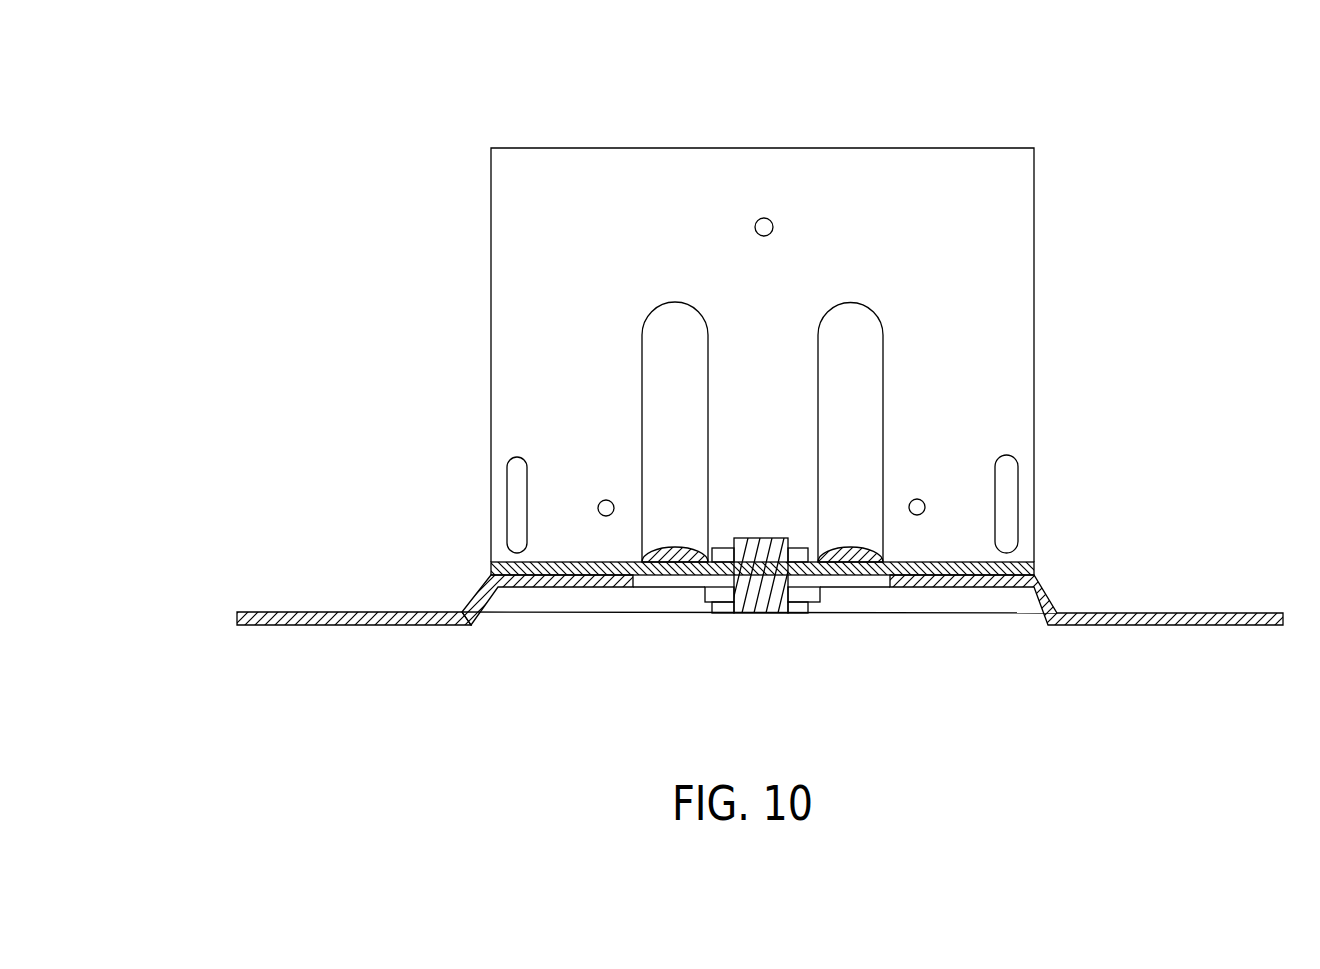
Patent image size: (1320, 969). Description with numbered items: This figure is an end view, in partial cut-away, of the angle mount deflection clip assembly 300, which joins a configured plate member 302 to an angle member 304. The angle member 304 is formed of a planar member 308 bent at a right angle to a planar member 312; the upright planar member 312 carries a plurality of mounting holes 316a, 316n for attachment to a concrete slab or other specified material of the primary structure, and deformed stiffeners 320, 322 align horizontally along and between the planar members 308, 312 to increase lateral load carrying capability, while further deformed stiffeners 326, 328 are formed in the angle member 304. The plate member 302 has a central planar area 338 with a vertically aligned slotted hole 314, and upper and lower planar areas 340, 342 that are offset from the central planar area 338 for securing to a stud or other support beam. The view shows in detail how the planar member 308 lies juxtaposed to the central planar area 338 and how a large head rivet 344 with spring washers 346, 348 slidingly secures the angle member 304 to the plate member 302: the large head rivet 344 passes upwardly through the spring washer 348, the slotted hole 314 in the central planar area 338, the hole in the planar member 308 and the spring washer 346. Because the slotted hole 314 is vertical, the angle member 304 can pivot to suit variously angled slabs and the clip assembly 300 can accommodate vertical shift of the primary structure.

The angle mount deflection clip assembly 300 is at (707, 104).
The plate member 302 is at (382, 652).
The angle member 304 is at (468, 417).
The planar member 308 is at (1036, 553).
The planar member 312 is at (995, 202).
The slotted hole 314 is at (673, 590).
The mounting hole 316a is at (917, 499).
The mounting hole 316n is at (606, 500).
The deformed stiffener 320 is at (867, 336).
The deformed stiffener 322 is at (668, 322).
The deformed stiffener 326 is at (1020, 472).
The deformed stiffener 328 is at (516, 458).
The central planar area 338 is at (607, 588).
The upper planar area 340 is at (1170, 612).
The lower planar area 342 is at (305, 612).
The large head rivet 344 is at (757, 600).
The spring washer 346 is at (722, 548).
The spring washer 348 is at (820, 597).